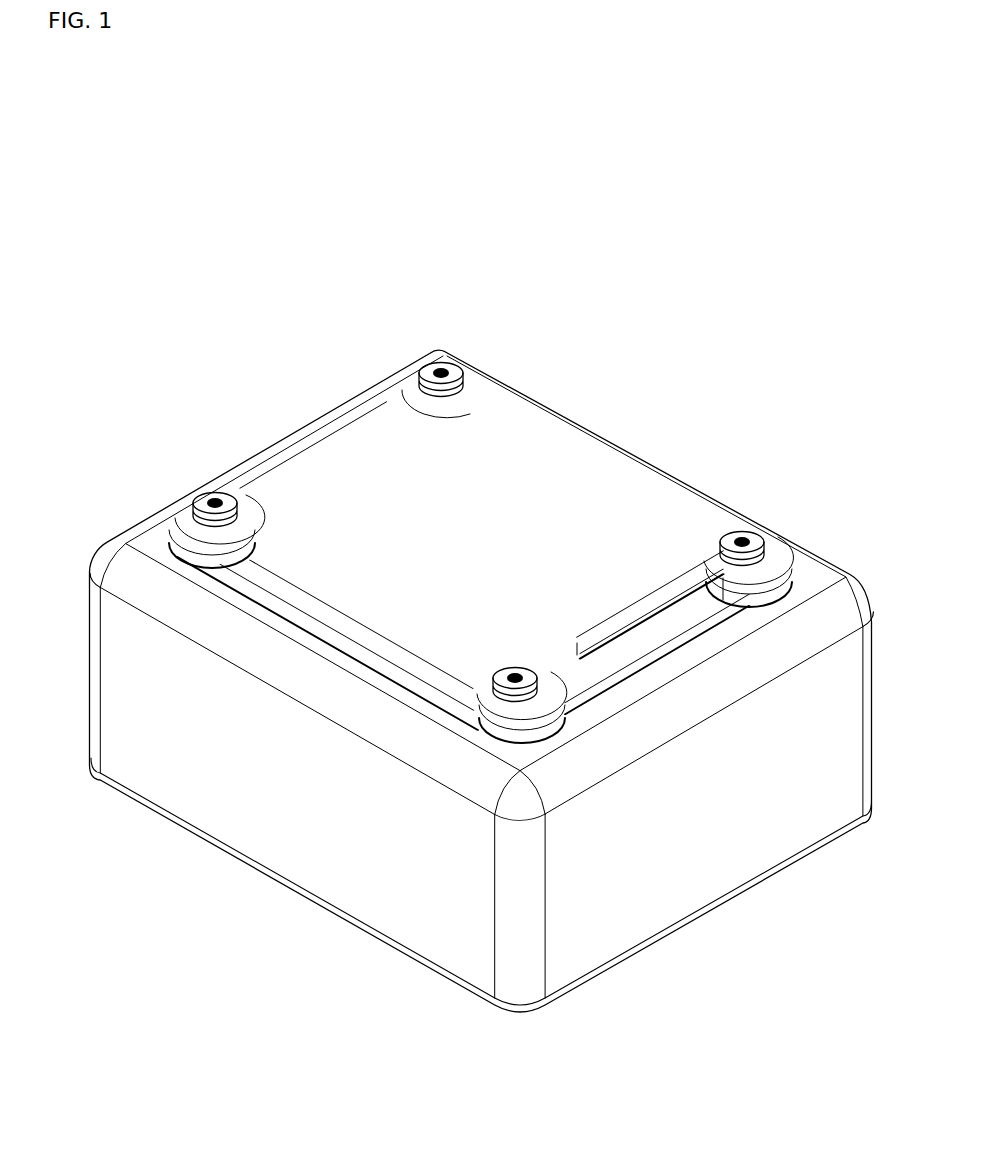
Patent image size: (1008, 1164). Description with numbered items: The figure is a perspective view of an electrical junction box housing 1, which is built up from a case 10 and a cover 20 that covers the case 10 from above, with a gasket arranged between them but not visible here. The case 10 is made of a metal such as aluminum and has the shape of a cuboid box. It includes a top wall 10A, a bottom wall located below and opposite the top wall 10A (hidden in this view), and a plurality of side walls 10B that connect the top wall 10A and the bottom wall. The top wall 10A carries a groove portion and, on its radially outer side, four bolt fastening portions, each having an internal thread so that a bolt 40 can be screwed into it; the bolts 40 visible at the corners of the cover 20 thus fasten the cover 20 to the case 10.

The electrical junction box housing 1 is at (466, 194).
The case 10 is at (100, 547).
The top wall 10A is at (810, 591).
The side walls 10B is at (298, 798).
The cover 20 is at (550, 497).
The bolt 40 is at (748, 532).